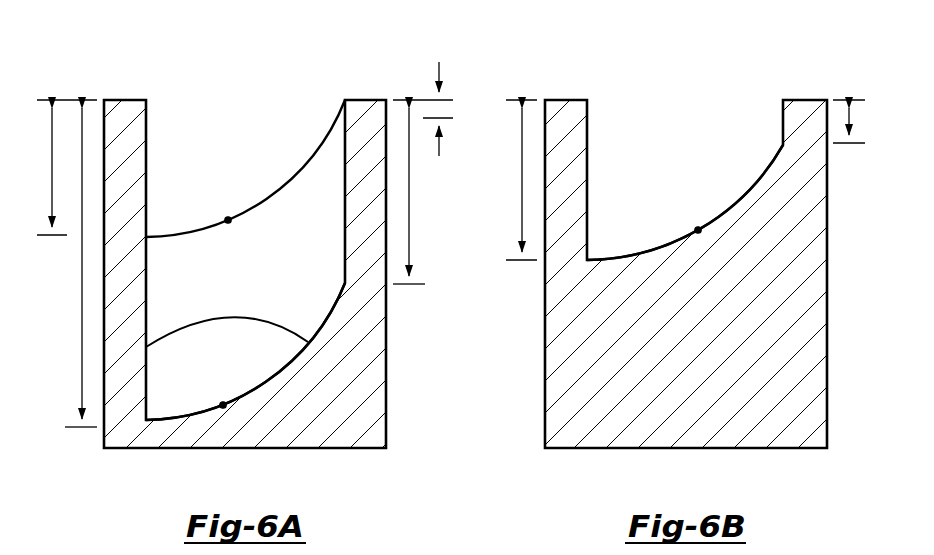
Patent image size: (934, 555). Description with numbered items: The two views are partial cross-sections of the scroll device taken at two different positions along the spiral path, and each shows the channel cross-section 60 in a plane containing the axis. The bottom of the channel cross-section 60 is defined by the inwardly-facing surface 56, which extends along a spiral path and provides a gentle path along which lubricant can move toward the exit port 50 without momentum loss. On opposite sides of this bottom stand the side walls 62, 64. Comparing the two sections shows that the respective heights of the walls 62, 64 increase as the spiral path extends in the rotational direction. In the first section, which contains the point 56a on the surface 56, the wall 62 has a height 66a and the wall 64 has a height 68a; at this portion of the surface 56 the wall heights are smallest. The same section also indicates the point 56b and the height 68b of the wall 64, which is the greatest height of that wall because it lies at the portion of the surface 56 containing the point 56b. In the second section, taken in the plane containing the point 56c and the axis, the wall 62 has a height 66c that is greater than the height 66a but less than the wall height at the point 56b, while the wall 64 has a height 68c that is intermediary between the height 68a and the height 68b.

In FIG. 6A, the exit port 50 is at (242, 380).
In FIG. 6A, the inwardly-facing surface 56 is at (262, 199).
In FIG. 6B, the inwardly-facing surface 56 is at (762, 175).
In FIG. 6A, the point 56a is at (228, 220).
In FIG. 6A, the point 56b is at (223, 405).
In FIG. 6B, the point 56c is at (698, 230).
In FIG. 6A, the channel cross-section 60 is at (233, 86).
In FIG. 6B, the channel cross-section 60 is at (672, 86).
In FIG. 6A, the side wall 62 is at (345, 104).
In FIG. 6B, the side wall 62 is at (783, 105).
In FIG. 6A, the side wall 64 is at (148, 120).
In FIG. 6B, the side wall 64 is at (587, 120).
In FIG. 6A, the height 66a is at (440, 72).
In FIG. 6A, the height 66c is at (412, 200).
In FIG. 6B, the height 66c is at (850, 118).
In FIG. 6A, the height 68a is at (52, 143).
In FIG. 6A, the height 68b is at (82, 260).
In FIG. 6B, the height 68c is at (522, 181).